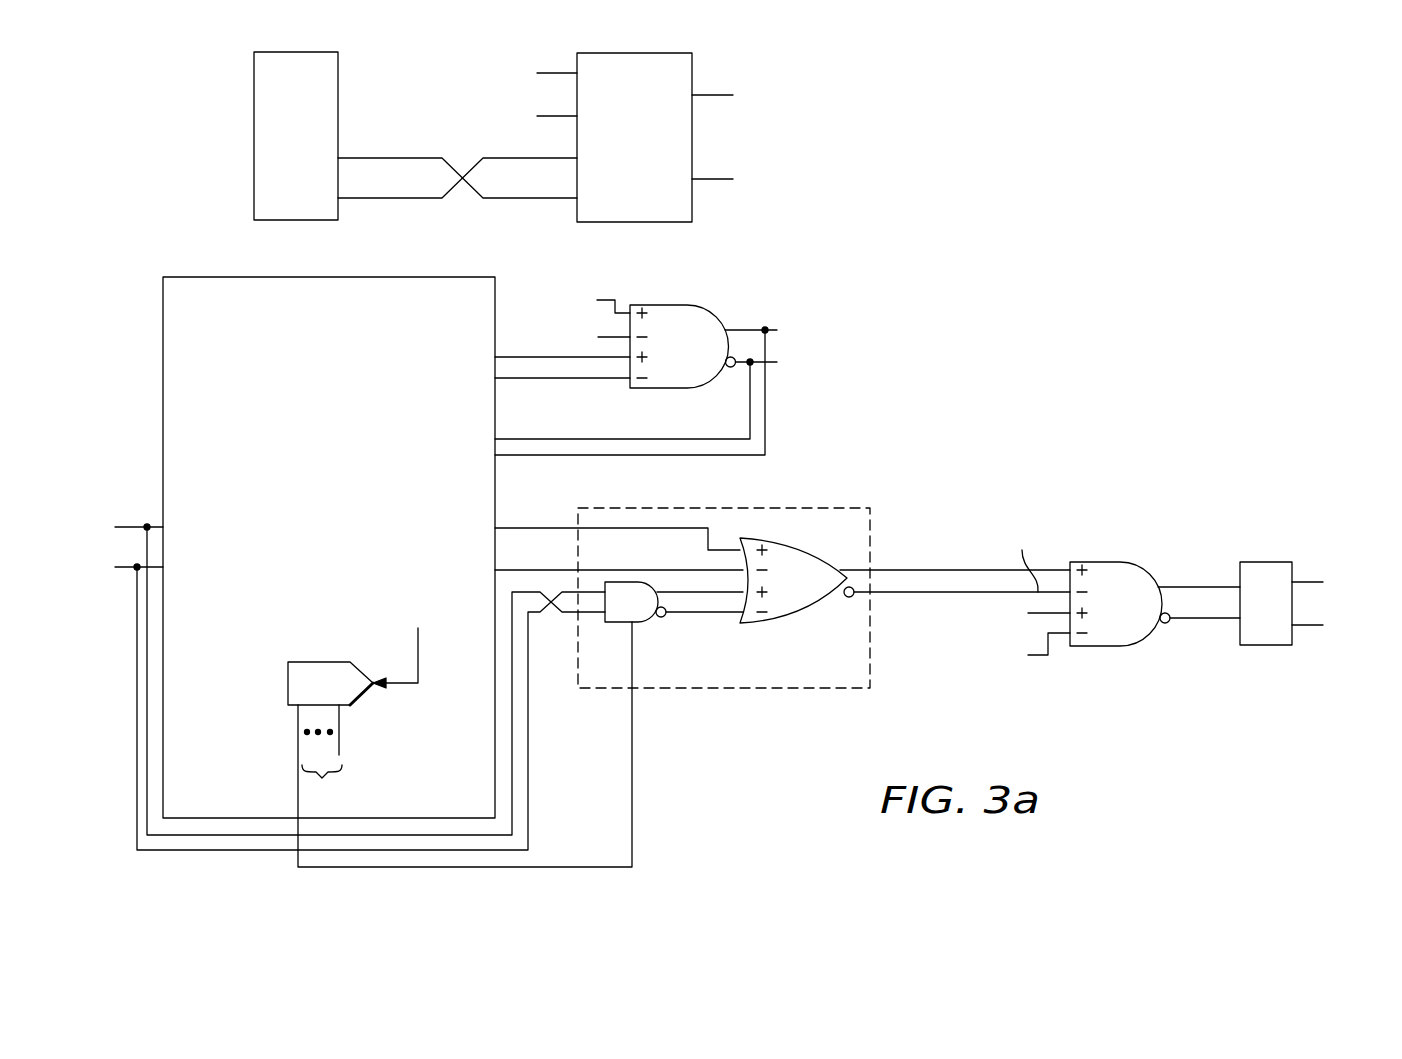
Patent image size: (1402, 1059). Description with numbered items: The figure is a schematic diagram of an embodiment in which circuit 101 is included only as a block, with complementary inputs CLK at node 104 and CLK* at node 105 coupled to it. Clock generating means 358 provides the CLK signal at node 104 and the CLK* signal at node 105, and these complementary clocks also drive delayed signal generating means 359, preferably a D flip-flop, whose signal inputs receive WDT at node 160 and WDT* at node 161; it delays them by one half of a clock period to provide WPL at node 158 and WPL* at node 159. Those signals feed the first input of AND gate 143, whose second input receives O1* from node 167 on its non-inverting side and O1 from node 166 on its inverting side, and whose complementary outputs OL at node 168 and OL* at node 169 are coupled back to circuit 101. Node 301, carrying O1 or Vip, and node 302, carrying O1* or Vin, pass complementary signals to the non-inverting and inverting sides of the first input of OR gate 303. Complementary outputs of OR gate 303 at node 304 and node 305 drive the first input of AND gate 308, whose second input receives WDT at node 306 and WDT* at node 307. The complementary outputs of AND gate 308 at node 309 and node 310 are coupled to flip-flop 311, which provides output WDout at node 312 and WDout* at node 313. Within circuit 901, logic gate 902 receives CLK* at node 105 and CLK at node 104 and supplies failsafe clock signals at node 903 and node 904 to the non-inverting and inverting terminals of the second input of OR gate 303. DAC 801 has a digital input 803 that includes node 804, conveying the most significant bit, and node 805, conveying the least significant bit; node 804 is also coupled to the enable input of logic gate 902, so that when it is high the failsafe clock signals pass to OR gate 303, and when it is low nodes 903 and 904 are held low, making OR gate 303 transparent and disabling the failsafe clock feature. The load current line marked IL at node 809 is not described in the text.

The circuit 101 is at (213, 277).
The node 104 is at (358, 158).
The node 105 is at (358, 198).
The AND gate 143 is at (698, 305).
The node 158 is at (712, 95).
The node 159 is at (712, 179).
The node 160 is at (556, 73).
The node 161 is at (562, 116).
The node 166 is at (537, 378).
The node 167 is at (537, 357).
The node 168 is at (748, 330).
The node 169 is at (750, 403).
The node 301 is at (532, 528).
The node 302 is at (685, 569).
The OR gate 303 is at (797, 623).
The node 304 is at (922, 570).
The node 305 is at (887, 595).
The node 306 is at (1037, 613).
The node 307 is at (1037, 657).
The AND gate 308 is at (1117, 647).
The node 309 is at (1182, 585).
The node 310 is at (1192, 623).
The flip-flop 311 is at (1267, 647).
The node 312 is at (1308, 582).
The node 313 is at (1310, 628).
The clock generating means 358 is at (323, 148).
The delayed signal generating means 359 is at (657, 177).
The DAC 801 is at (320, 662).
The digital input 803 is at (322, 786).
The node 804 is at (298, 716).
The node 805 is at (340, 732).
The load current IL line 809 is at (418, 642).
The circuit 901 is at (822, 508).
The logic gate 902 is at (622, 622).
The node 903 is at (697, 594).
The node 904 is at (677, 614).